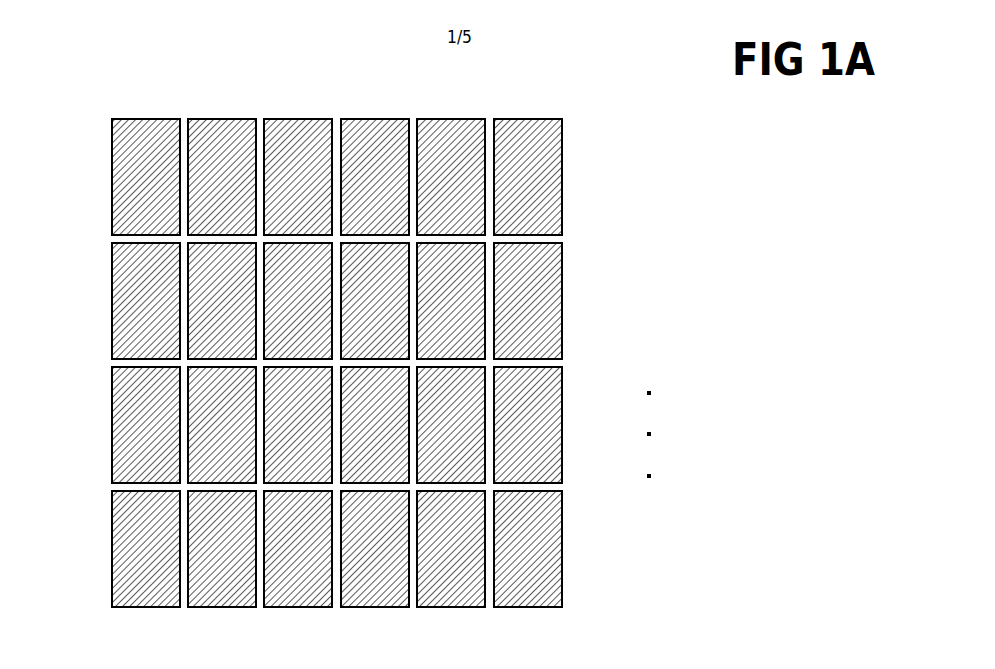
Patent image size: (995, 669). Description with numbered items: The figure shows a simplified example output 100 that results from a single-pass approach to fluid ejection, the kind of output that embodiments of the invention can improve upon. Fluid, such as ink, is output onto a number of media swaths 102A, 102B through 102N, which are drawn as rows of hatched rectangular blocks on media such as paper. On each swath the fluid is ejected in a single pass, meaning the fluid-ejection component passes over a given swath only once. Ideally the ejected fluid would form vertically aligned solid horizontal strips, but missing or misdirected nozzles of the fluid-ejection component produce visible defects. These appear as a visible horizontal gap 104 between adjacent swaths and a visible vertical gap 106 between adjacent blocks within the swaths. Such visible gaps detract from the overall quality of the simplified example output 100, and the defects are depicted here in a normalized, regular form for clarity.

The simplified example output 100 is at (455, 326).
The media swath 102A is at (591, 166).
The media swath 102B is at (591, 299).
The media swath 102N is at (593, 550).
The visible horizontal gap 104 is at (99, 241).
The visible vertical gap 106 is at (336, 102).